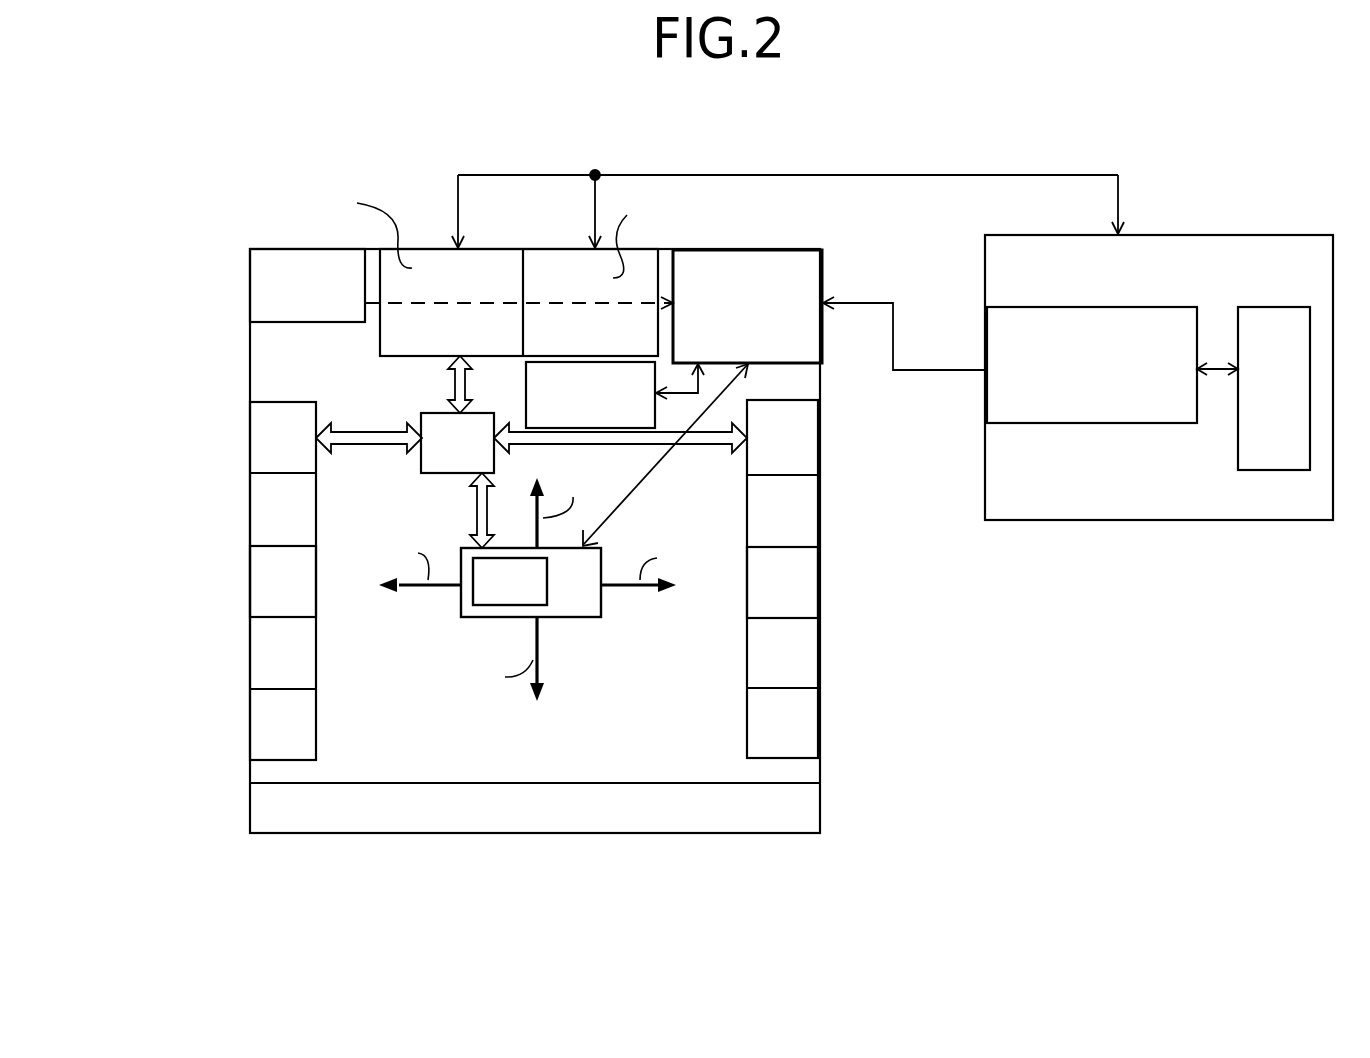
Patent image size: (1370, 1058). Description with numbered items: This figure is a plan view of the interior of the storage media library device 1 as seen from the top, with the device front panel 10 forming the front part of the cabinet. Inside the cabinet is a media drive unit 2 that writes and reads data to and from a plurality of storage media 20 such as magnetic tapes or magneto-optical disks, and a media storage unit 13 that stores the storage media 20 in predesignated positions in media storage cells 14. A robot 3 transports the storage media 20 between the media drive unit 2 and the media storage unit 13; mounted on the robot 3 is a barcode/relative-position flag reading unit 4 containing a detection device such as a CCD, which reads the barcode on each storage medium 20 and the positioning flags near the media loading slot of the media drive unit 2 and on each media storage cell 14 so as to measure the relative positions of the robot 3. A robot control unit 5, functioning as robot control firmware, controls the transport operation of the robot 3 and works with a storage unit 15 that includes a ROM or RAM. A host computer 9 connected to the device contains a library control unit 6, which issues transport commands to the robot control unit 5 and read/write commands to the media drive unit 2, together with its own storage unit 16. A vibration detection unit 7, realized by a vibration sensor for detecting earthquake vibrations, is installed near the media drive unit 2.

The storage media library device 1 is at (420, 208).
The media drive unit 2 is at (552, 258).
The robot 3 is at (583, 607).
The barcode/relative-position flag reading unit 4 is at (490, 593).
The robot control unit 5 is at (787, 250).
The library control unit 6 is at (985, 408).
The vibration detection unit 7 is at (258, 283).
The host computer 9 is at (1278, 233).
The device front panel 10 is at (763, 813).
The media storage unit 13 is at (226, 666).
The media storage cell 14 is at (258, 578).
The storage unit 15 is at (526, 412).
The storage unit 16 is at (1262, 470).
The storage media 20 is at (430, 425).